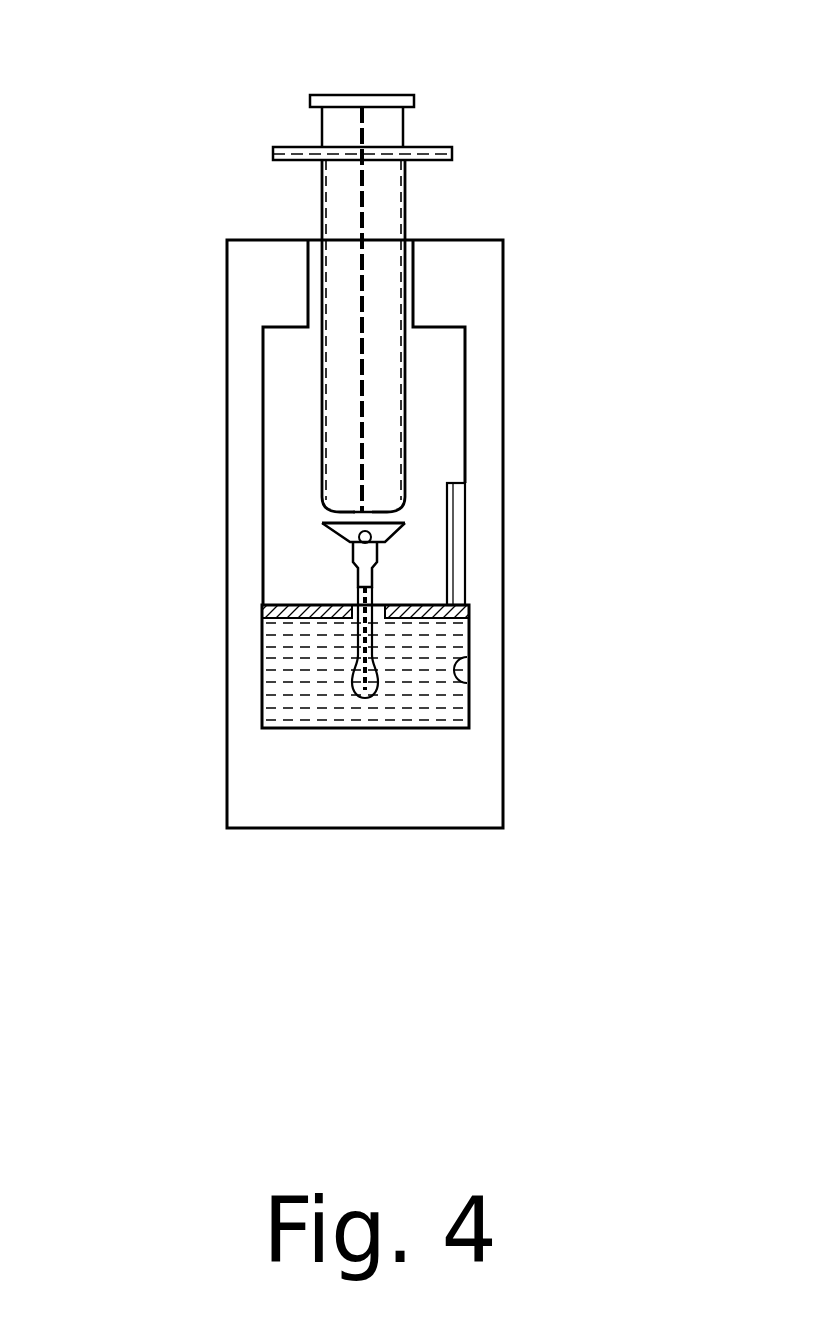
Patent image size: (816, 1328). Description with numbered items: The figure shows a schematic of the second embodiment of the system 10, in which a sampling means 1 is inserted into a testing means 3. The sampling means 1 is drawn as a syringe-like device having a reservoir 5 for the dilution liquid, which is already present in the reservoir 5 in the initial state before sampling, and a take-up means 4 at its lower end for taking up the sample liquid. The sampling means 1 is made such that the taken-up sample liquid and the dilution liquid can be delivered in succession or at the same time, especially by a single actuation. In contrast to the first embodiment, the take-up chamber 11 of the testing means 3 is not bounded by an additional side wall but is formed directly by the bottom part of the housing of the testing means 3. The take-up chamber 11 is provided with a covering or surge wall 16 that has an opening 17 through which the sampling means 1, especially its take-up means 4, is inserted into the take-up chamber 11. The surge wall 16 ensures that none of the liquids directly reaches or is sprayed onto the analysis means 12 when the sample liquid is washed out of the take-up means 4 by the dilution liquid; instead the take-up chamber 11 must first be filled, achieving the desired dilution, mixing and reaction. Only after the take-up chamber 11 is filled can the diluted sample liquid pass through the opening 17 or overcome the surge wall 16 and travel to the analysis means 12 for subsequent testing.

The system 10 is at (580, 180).
The sampling means 1 is at (300, 379).
The testing means 3 is at (227, 441).
The analysis means 12 is at (453, 510).
The reservoir 5 is at (387, 530).
The opening 17 is at (347, 605).
The surge wall 16 is at (290, 613).
The take-up means 4 is at (340, 647).
The take-up chamber 11 is at (453, 677).